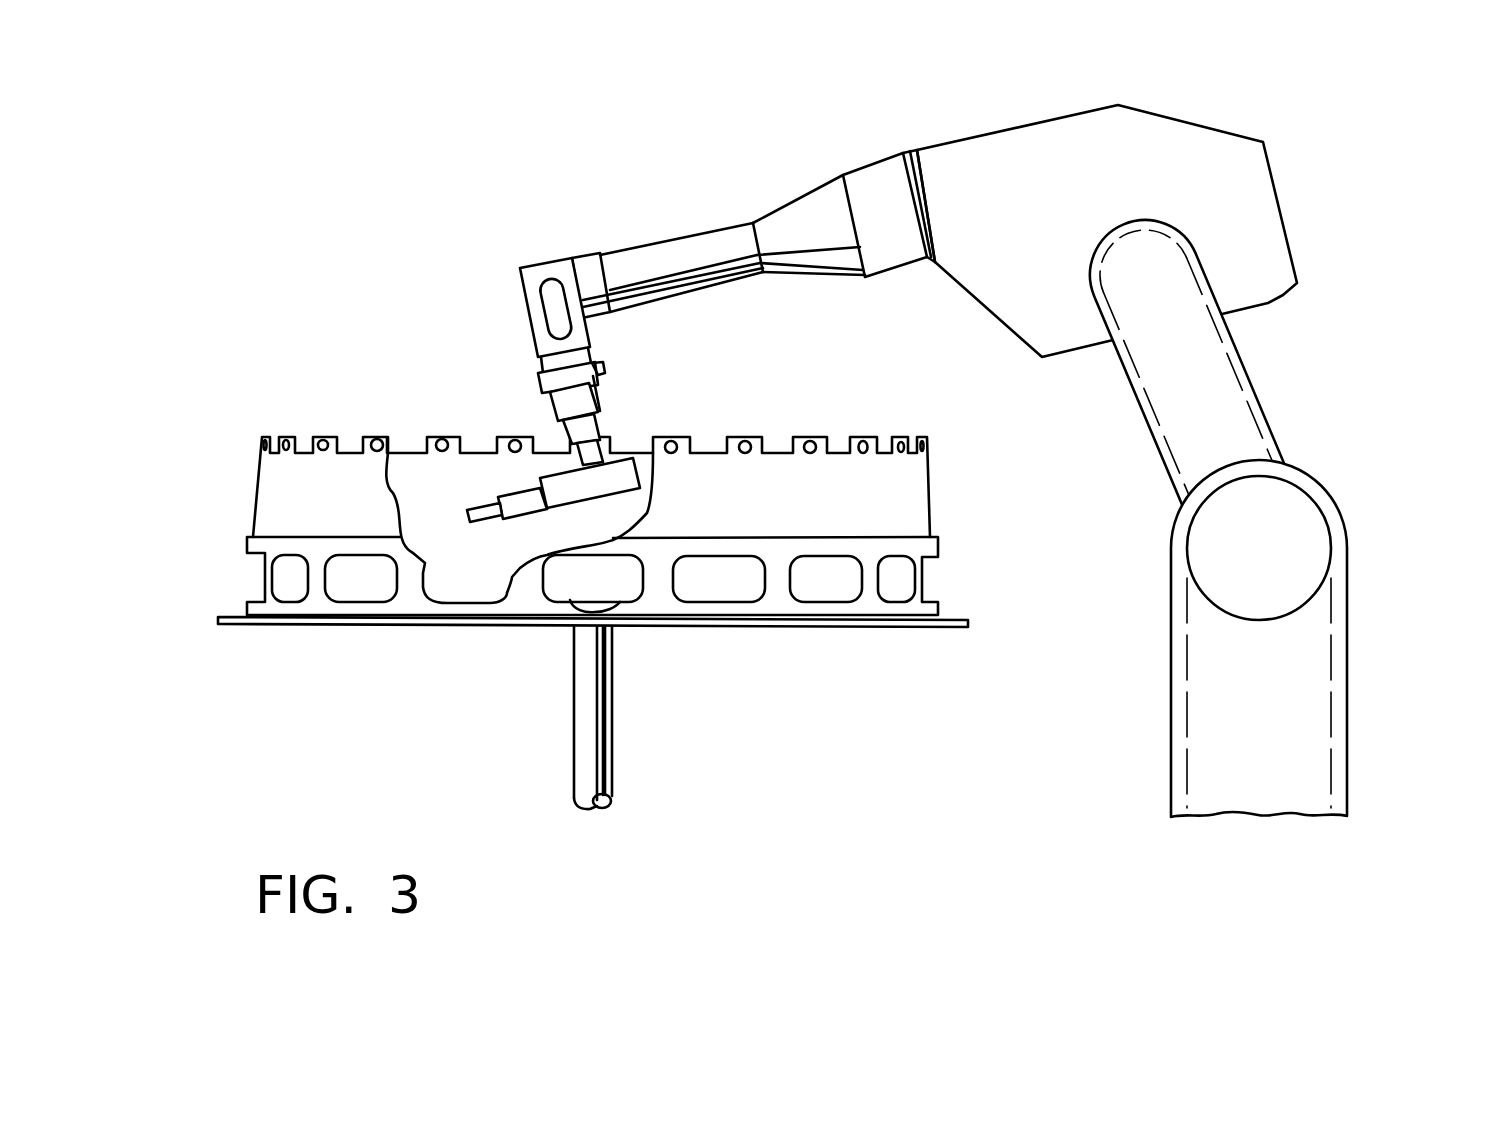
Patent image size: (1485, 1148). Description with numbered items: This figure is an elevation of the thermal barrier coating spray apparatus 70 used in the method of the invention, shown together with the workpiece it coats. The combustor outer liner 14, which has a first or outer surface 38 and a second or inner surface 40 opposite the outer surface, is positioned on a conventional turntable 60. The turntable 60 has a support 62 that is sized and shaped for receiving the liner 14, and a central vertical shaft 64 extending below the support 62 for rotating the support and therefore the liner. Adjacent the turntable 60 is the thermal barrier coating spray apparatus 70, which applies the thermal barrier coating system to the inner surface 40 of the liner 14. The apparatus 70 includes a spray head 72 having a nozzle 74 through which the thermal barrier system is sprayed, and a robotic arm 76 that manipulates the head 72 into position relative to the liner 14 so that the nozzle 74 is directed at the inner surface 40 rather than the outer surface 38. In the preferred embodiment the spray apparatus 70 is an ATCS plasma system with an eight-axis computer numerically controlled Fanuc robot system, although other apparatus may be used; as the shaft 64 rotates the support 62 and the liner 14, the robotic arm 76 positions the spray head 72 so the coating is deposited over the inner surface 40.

The outer liner 14 is at (645, 526).
The outer surface 38 is at (797, 506).
The inner surface 40 is at (433, 503).
The turntable 60 is at (593, 713).
The support 62 is at (705, 628).
The central vertical shaft 64 is at (612, 726).
The thermal barrier coating spray apparatus 70 is at (1305, 173).
The spray head 72 is at (520, 515).
The nozzle 74 is at (472, 505).
The robotic arm 76 is at (979, 305).